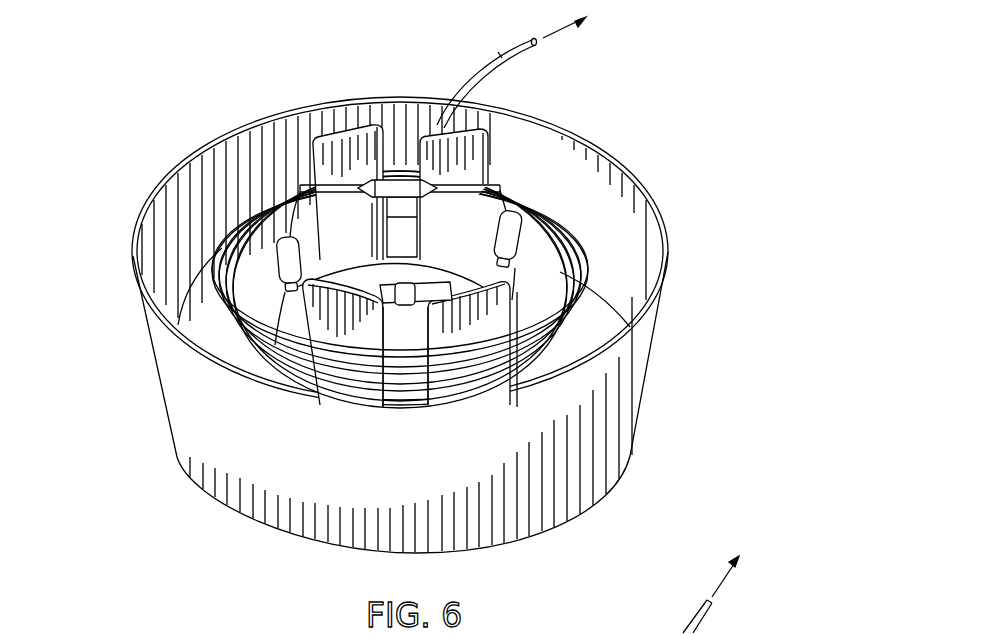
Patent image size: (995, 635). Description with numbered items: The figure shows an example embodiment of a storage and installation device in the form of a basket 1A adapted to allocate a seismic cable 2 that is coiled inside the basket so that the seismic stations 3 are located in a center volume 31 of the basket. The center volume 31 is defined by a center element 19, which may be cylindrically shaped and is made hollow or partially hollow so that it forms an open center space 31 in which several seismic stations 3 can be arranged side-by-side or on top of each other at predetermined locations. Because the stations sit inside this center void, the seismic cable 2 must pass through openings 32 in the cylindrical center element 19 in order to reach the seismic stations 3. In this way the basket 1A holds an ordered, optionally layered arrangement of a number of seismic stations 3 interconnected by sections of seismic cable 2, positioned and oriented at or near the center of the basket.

The basket 1A is at (662, 70).
The seismic cable 2 is at (203, 231).
The seismic stations 3 is at (272, 222).
The center element 19 is at (356, 232).
The center volume 31 is at (233, 128).
The openings 32 is at (400, 123).